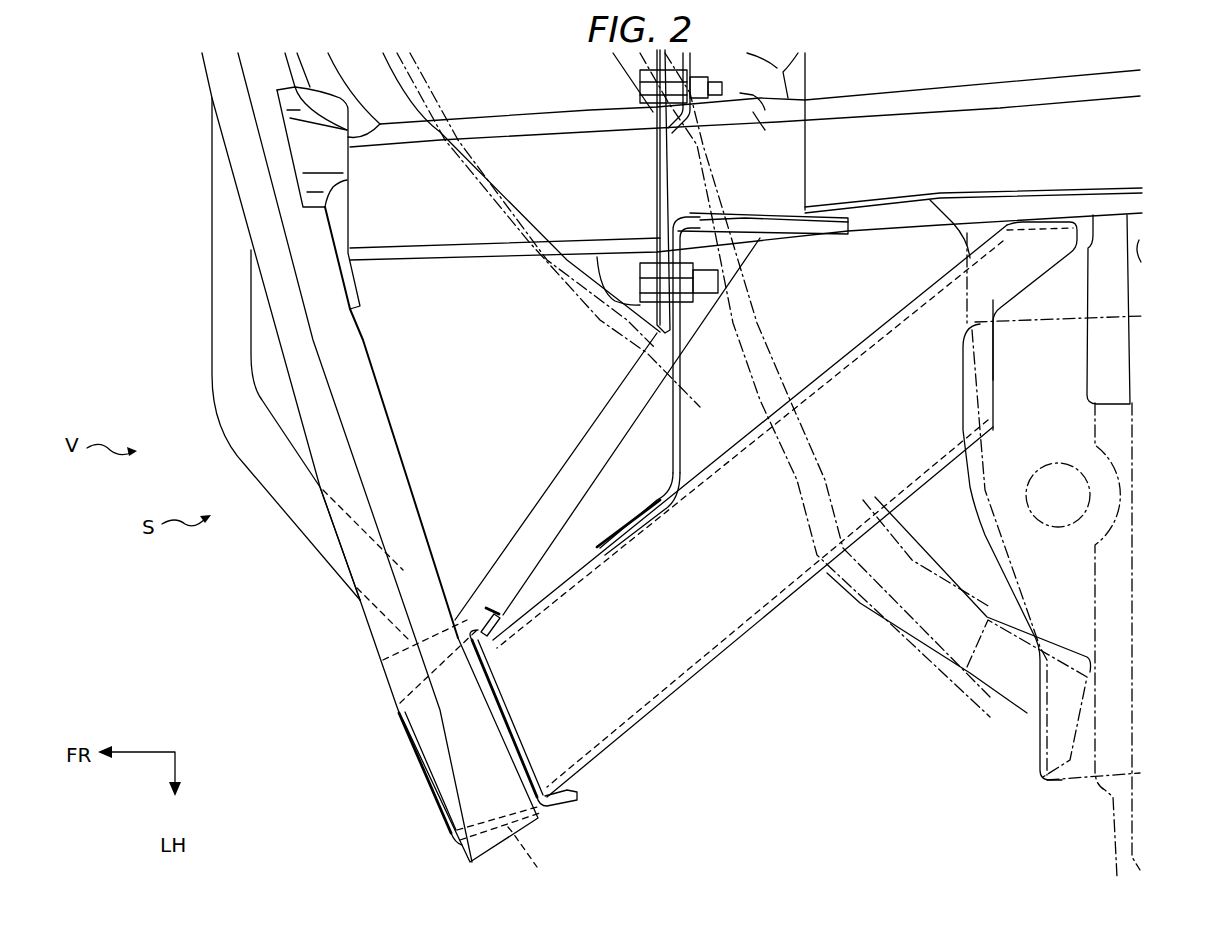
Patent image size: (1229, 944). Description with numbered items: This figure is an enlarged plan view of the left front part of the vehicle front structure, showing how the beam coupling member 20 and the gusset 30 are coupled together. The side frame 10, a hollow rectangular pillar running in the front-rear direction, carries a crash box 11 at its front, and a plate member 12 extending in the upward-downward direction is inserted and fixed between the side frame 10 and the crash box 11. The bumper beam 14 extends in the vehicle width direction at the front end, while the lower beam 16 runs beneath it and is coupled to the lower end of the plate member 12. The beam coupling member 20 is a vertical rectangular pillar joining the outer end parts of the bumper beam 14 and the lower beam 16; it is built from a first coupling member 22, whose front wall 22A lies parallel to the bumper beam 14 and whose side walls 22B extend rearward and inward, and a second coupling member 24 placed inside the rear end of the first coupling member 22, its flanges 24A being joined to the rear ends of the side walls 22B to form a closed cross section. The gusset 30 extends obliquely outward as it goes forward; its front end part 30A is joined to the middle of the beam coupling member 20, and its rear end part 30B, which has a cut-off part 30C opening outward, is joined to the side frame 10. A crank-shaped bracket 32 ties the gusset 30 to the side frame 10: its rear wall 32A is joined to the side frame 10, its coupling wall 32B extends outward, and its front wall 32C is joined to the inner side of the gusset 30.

The side frame 10 is at (1125, 138).
The crash box 11 is at (455, 262).
The plate member 12 is at (668, 208).
The bumper beam 14 is at (250, 165).
The lower beam 16 is at (212, 285).
The beam coupling member 20 is at (422, 778).
The first coupling member 22 is at (440, 810).
The front wall 22A is at (405, 757).
The side walls 22B is at (413, 683).
The second coupling member 24 is at (510, 720).
The flange 24A is at (485, 636).
The gusset 30 is at (727, 645).
The front end part 30A is at (537, 743).
The rear end part 30B is at (1043, 247).
The cut-off part 30C is at (993, 378).
The bracket 32 is at (670, 440).
The rear wall 32A is at (797, 233).
The coupling wall 32B is at (672, 343).
The front wall 32C is at (630, 518).